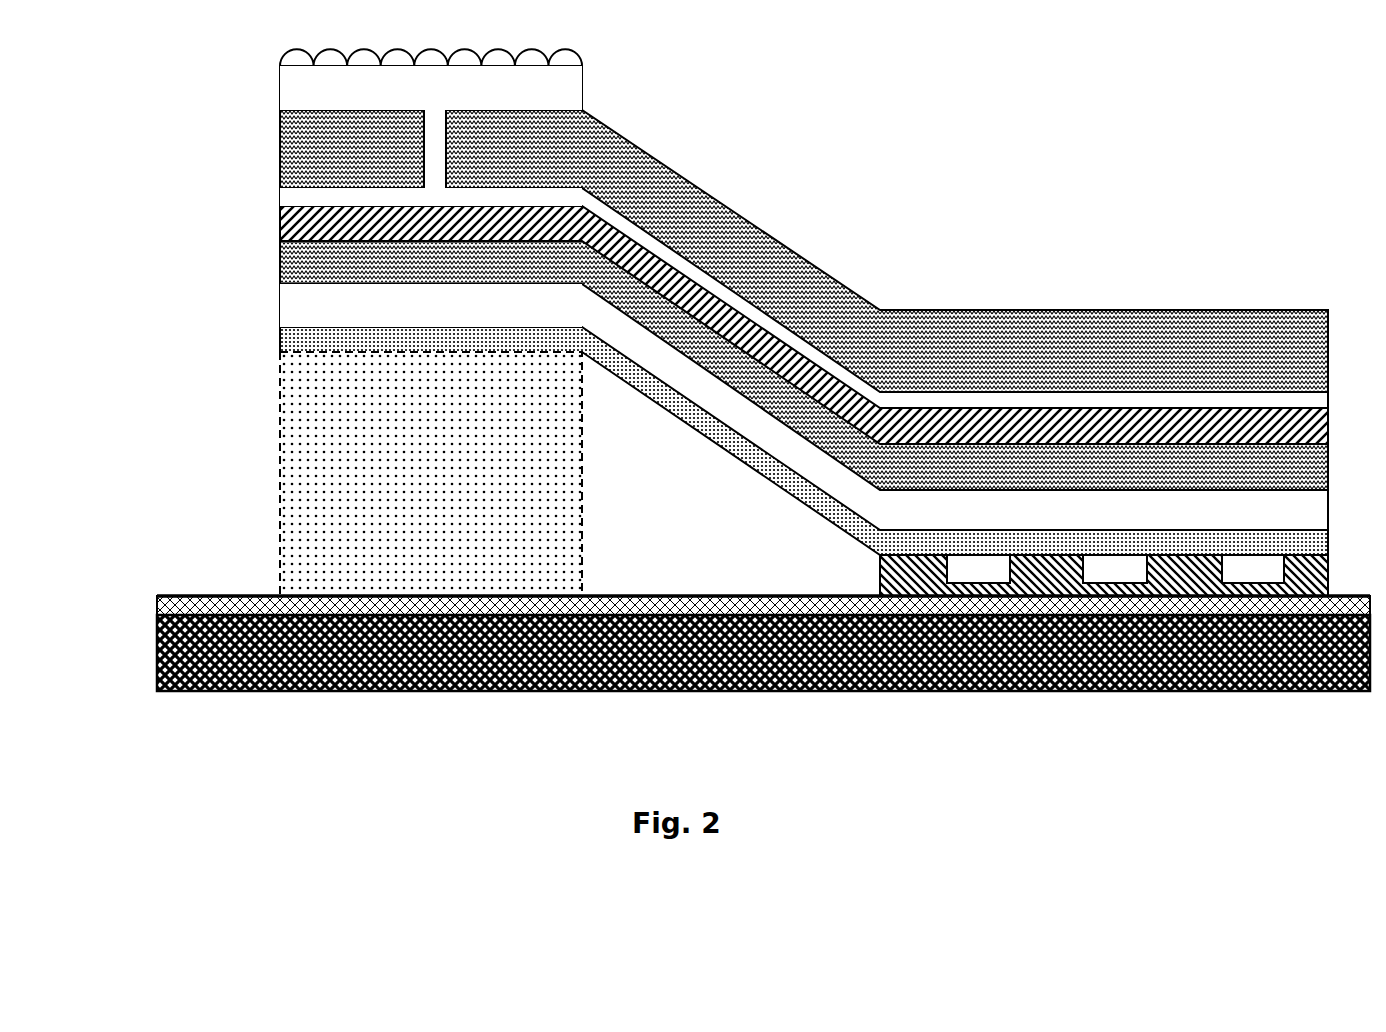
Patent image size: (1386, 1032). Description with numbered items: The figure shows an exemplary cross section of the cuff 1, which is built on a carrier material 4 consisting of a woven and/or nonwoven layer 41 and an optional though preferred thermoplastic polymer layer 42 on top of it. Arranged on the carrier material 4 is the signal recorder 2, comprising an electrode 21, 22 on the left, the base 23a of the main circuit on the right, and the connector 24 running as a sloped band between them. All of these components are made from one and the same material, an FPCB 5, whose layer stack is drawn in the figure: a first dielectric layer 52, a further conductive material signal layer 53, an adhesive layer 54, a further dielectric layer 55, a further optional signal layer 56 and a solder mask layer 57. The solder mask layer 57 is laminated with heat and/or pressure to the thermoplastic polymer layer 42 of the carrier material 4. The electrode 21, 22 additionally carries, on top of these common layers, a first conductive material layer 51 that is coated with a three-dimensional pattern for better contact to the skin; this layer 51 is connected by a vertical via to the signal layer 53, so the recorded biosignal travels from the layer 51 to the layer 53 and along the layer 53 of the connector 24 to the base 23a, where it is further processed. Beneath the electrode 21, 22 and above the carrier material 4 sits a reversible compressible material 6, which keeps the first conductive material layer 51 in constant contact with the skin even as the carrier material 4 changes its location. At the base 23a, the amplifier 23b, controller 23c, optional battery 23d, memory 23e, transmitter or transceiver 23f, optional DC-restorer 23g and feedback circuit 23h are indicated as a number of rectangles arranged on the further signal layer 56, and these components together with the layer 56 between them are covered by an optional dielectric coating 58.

The cuff 1 is at (725, 386).
The signal recorder 2 is at (728, 300).
The carrier material 4 is at (113, 699).
The FPCB 5 is at (222, 348).
The reversible compressible material 6 is at (416, 474).
The electrode 21 is at (431, 36).
The electrode 22 is at (431, 36).
The base 23a is at (1104, 408).
The amplifier 23b is at (1115, 661).
The controller 23c is at (1115, 661).
The battery 23d is at (1115, 661).
The memory 23e is at (1115, 661).
The transmitter or transceiver 23f is at (1115, 661).
The DC-restorer 23g is at (1115, 661).
The feedback circuit 23h is at (990, 565).
The connector 24 is at (955, 332).
The woven and/or nonwoven layer 41 is at (743, 653).
The thermoplastic polymer layer 42 is at (743, 586).
The first conductive material layer 51 is at (411, 88).
The first dielectric layer 52 is at (411, 149).
The further conductive material signal layer 53 is at (411, 199).
The adhesive layer 54 is at (411, 224).
The further dielectric layer 55 is at (411, 262).
The further optional signal layer 56 is at (411, 305).
The solder mask layer 57 is at (411, 338).
The dielectric coating 58 is at (1126, 661).